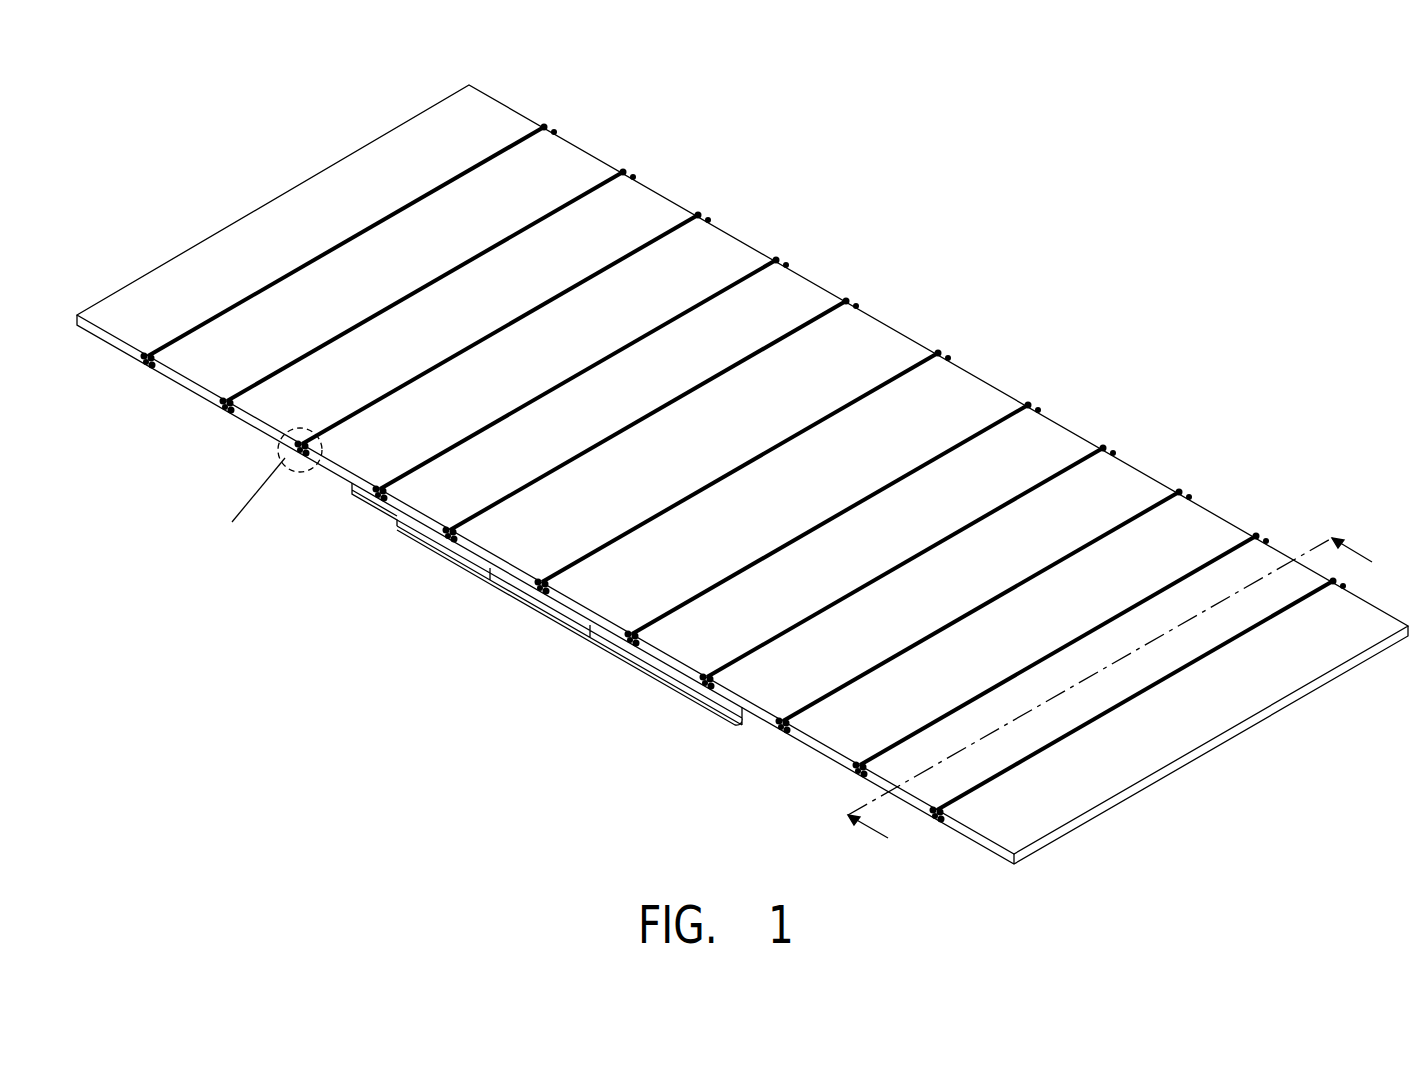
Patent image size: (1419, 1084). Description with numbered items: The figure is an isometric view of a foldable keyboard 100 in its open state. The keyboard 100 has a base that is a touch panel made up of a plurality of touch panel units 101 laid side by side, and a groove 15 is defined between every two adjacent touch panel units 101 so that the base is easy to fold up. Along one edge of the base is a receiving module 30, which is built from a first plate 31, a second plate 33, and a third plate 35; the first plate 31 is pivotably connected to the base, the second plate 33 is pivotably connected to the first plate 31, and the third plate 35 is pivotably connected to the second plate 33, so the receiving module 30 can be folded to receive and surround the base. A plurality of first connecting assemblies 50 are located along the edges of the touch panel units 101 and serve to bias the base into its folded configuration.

The foldable keyboard 100 is at (742, 466).
The touch panel unit 101 is at (470, 118).
The groove 15 is at (303, 267).
The receiving module 30 is at (520, 604).
The first plate 31 is at (581, 649).
The second plate 33 is at (428, 530).
The third plate 35 is at (382, 508).
The first connecting assembly 50 is at (545, 607).